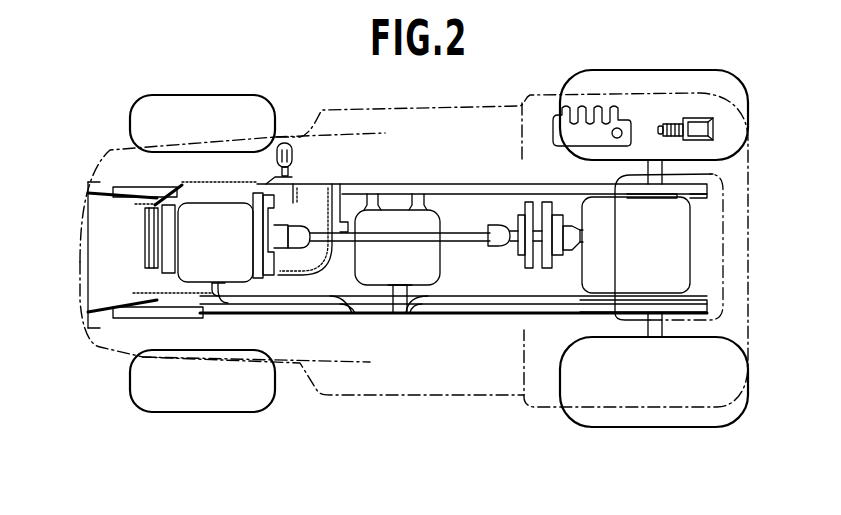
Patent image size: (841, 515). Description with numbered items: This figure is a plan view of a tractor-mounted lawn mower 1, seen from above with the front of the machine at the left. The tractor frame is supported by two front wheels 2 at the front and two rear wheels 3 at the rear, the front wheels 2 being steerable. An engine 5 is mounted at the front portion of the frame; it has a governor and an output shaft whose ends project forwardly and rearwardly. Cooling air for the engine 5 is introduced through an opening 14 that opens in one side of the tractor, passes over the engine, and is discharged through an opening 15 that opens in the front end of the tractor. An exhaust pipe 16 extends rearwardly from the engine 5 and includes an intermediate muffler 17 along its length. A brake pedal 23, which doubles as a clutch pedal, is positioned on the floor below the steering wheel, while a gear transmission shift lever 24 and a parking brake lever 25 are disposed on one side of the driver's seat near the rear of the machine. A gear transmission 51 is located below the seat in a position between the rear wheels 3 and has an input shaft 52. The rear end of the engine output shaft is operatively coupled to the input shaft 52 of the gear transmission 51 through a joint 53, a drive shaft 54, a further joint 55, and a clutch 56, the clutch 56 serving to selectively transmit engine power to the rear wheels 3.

The tractor-mounted lawn mower 1 is at (105, 150).
The front wheels 2 is at (170, 95).
The rear wheels 3 is at (727, 71).
The engine 5 is at (183, 192).
The opening 14 is at (318, 185).
The opening 15 is at (100, 268).
The exhaust pipe 16 is at (307, 303).
The muffler 17 is at (368, 278).
The brake pedal 23 is at (293, 138).
The gear transmission shift lever 24 is at (625, 126).
The parking brake lever 25 is at (673, 122).
The gear transmission 51 is at (694, 239).
The input shaft 52 is at (575, 247).
The joint 53 is at (302, 228).
The drive shaft 54 is at (420, 226).
The joint 55 is at (498, 227).
The clutch 56 is at (527, 285).